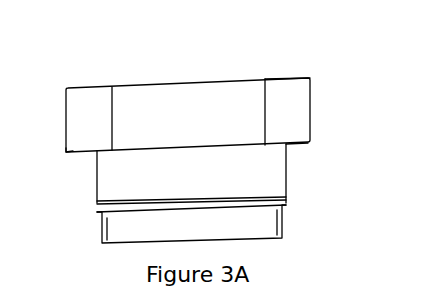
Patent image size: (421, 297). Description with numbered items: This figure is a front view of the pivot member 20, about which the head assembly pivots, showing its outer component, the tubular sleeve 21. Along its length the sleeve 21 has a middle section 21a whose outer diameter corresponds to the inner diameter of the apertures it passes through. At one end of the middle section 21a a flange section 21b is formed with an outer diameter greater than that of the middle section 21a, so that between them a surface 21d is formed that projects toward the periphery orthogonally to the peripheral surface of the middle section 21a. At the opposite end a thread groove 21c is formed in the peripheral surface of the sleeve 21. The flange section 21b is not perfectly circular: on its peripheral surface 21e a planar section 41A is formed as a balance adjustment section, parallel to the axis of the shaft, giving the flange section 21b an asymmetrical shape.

The pivot member 20 is at (307, 95).
The sleeve 21 is at (83, 97).
The planar section 41A is at (223, 90).
The flange section 21b is at (302, 123).
The surface 21d is at (303, 147).
The middle section 21a is at (287, 180).
The thread groove 21c is at (286, 227).
The peripheral surface 21e is at (68, 140).